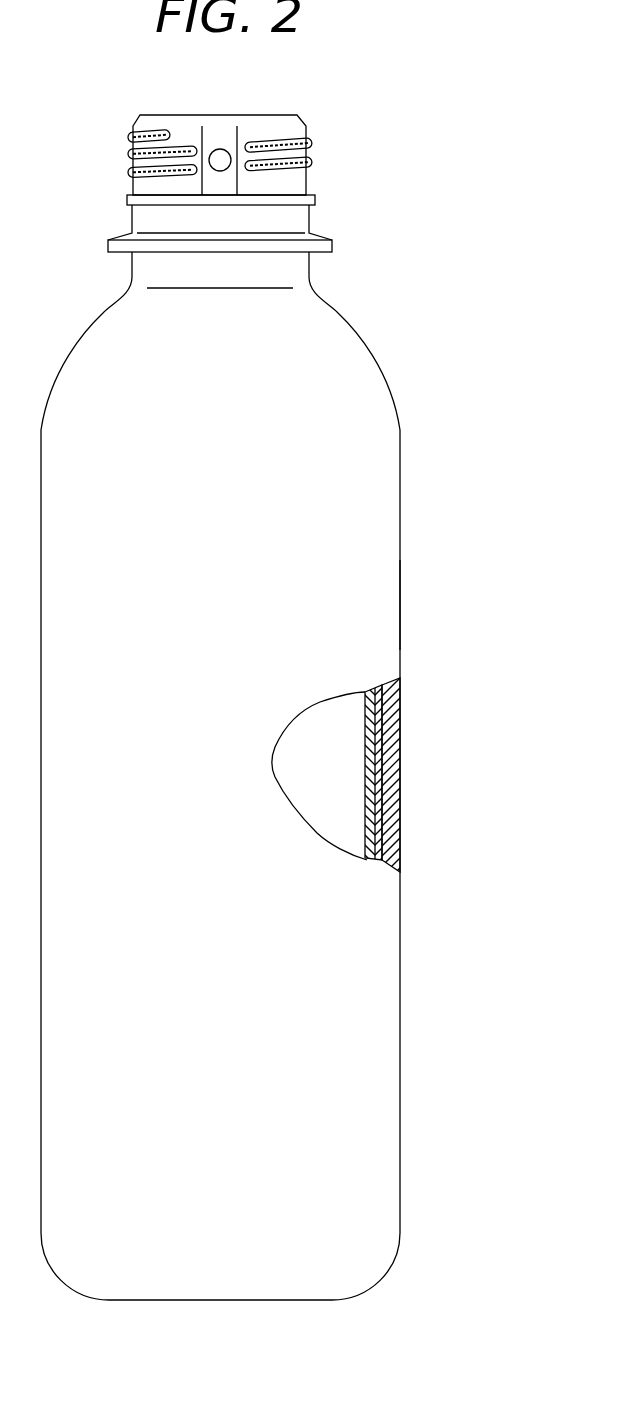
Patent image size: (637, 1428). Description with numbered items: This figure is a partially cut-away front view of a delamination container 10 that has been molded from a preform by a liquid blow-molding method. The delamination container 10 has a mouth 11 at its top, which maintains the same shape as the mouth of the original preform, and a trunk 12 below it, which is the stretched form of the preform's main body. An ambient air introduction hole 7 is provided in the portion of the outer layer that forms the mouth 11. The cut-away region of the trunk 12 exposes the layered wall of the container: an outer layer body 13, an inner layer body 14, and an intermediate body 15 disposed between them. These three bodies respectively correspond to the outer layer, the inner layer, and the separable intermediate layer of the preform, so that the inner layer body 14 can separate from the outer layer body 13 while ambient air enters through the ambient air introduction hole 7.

The ambient air introduction hole 7 is at (218, 153).
The delamination container 10 is at (413, 331).
The mouth 11 is at (273, 133).
The trunk 12 is at (367, 613).
The outer layer body 13 is at (390, 778).
The inner layer body 14 is at (365, 735).
The intermediate body 15 is at (380, 725).